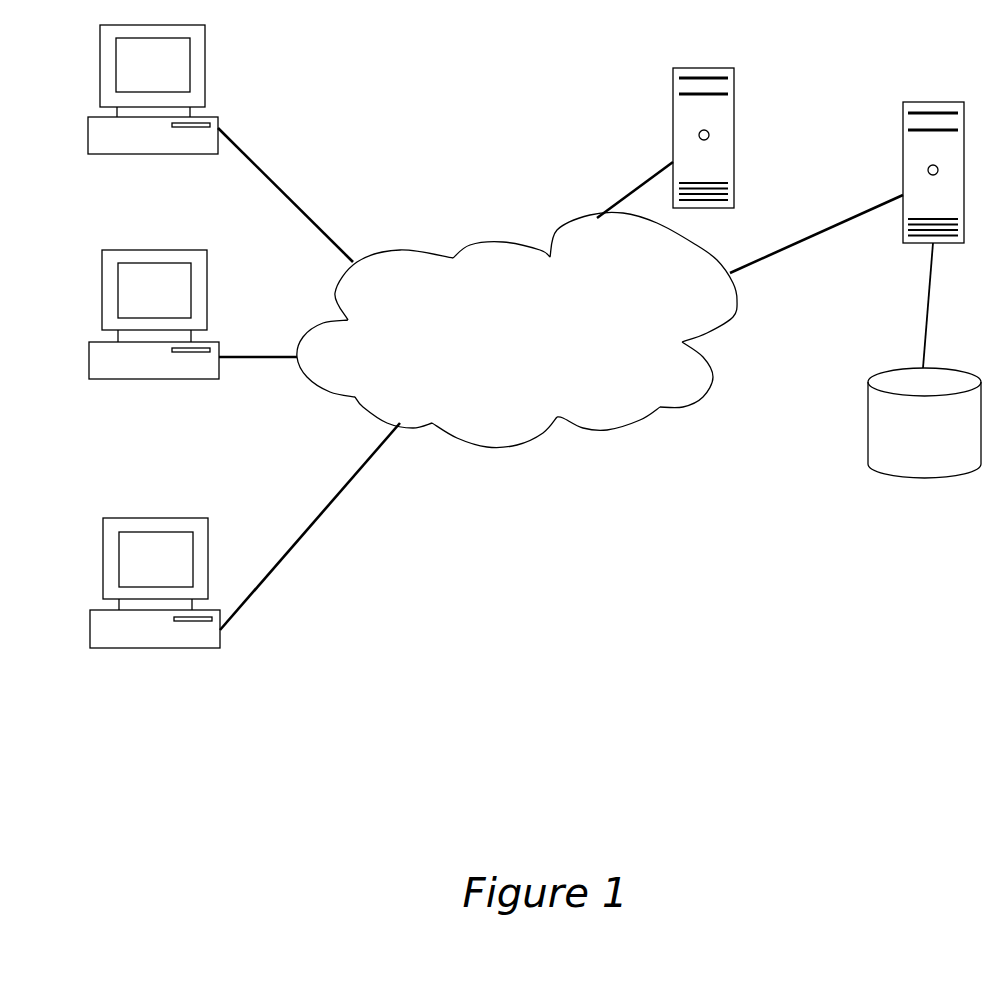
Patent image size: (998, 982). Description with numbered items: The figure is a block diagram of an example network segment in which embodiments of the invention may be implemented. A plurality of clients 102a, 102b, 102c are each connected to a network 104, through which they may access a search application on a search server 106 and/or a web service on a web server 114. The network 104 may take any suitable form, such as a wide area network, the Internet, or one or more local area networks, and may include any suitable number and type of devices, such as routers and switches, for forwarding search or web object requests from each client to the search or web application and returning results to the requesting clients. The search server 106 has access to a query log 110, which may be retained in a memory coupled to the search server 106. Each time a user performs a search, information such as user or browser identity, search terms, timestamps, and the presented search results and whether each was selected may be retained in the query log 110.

The client 102a is at (92, 127).
The client 102b is at (92, 350).
The client 102c is at (92, 618).
The network 104 is at (517, 329).
The web server 114 is at (673, 127).
The search server 106 is at (903, 163).
The query log 110 is at (877, 375).